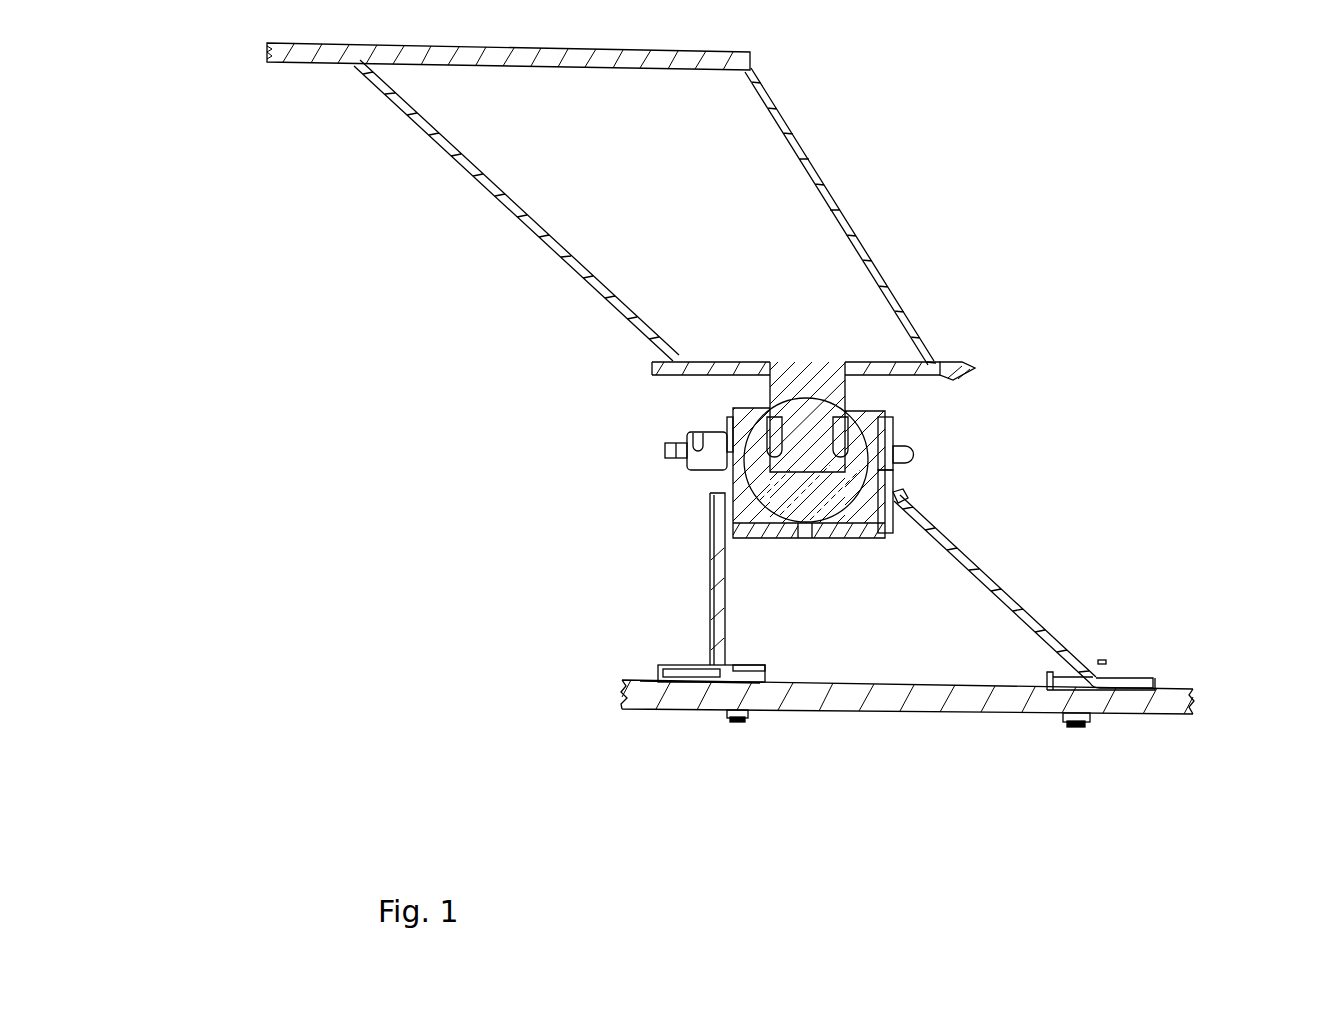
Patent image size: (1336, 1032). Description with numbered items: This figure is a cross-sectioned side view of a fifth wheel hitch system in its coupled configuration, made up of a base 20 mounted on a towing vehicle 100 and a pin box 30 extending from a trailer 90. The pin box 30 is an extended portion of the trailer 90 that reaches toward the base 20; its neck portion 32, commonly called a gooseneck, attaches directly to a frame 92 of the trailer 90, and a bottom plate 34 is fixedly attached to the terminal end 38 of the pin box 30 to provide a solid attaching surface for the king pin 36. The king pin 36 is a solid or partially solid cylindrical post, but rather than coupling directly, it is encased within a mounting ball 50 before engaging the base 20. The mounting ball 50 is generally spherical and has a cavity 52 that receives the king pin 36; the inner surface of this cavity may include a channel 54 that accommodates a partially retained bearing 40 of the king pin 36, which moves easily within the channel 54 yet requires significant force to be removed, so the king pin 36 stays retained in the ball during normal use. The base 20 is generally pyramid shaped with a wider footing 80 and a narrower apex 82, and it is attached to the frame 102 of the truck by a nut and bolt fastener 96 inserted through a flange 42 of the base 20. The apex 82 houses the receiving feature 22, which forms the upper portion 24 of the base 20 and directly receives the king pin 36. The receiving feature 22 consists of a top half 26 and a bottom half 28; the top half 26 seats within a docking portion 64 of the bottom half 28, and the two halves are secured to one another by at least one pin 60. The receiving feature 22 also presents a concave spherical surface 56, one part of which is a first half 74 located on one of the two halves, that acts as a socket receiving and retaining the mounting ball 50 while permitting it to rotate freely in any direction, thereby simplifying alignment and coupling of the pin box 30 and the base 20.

The base 20 is at (1017, 605).
The receiving feature 22 is at (745, 505).
The upper portion 24 is at (687, 505).
The top half 26 is at (720, 412).
The bottom half 28 is at (873, 513).
The pin box 30 is at (863, 240).
The neck portion 32 is at (798, 142).
The bottom plate 34 is at (870, 309).
The king pin 36 is at (807, 403).
The terminal end 38 is at (940, 343).
The partially retained bearing 40 is at (883, 441).
The flange 42 is at (1160, 673).
The mounting ball 50 is at (792, 502).
The cavity 52 is at (768, 452).
The channel 54 is at (848, 447).
The spherical surface 56 is at (873, 480).
The pin 60 is at (657, 455).
The docking portion 64 is at (914, 450).
The first half 74 is at (723, 423).
The footing 80 is at (1109, 588).
The apex 82 is at (898, 497).
The trailer 90 is at (287, 65).
The frame 92 is at (435, 68).
The fastener 96 is at (728, 727).
The towing vehicle 100 is at (1200, 690).
The frame 102 is at (620, 678).